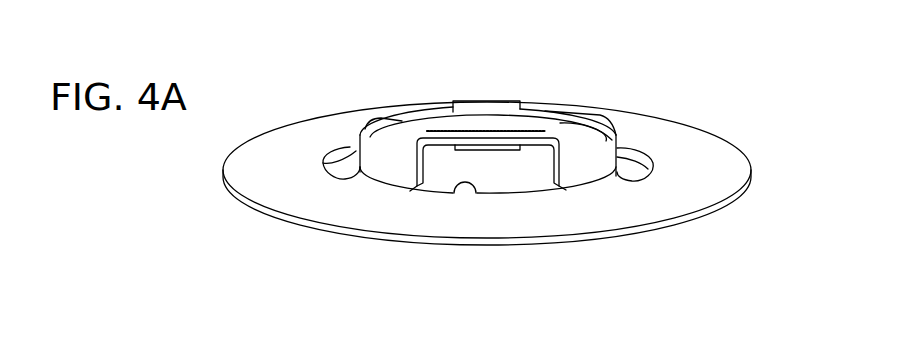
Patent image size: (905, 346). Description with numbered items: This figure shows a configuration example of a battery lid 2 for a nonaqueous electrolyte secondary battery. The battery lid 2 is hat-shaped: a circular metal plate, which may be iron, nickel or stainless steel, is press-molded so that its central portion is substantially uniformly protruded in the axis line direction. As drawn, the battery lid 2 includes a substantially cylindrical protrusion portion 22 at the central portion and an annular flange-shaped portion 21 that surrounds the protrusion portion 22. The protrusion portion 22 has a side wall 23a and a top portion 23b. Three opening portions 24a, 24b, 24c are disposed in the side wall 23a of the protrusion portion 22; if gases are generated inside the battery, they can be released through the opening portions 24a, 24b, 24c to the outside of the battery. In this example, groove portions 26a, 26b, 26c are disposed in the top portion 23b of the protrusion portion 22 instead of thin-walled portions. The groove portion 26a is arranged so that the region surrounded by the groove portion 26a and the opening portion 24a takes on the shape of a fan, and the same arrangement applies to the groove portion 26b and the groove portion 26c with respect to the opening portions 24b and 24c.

The battery lid 2 is at (180, 166).
The annular flange-shaped portion 21 is at (733, 173).
The protrusion portion 22 is at (420, 100).
The side wall 23a is at (606, 147).
The top portion 23b is at (483, 122).
The opening portion 24a is at (462, 186).
The opening portion 24b is at (628, 149).
The opening portion 24c is at (349, 154).
The groove portion 26a is at (561, 142).
The groove portion 26b is at (560, 123).
The groove portion 26c is at (381, 107).